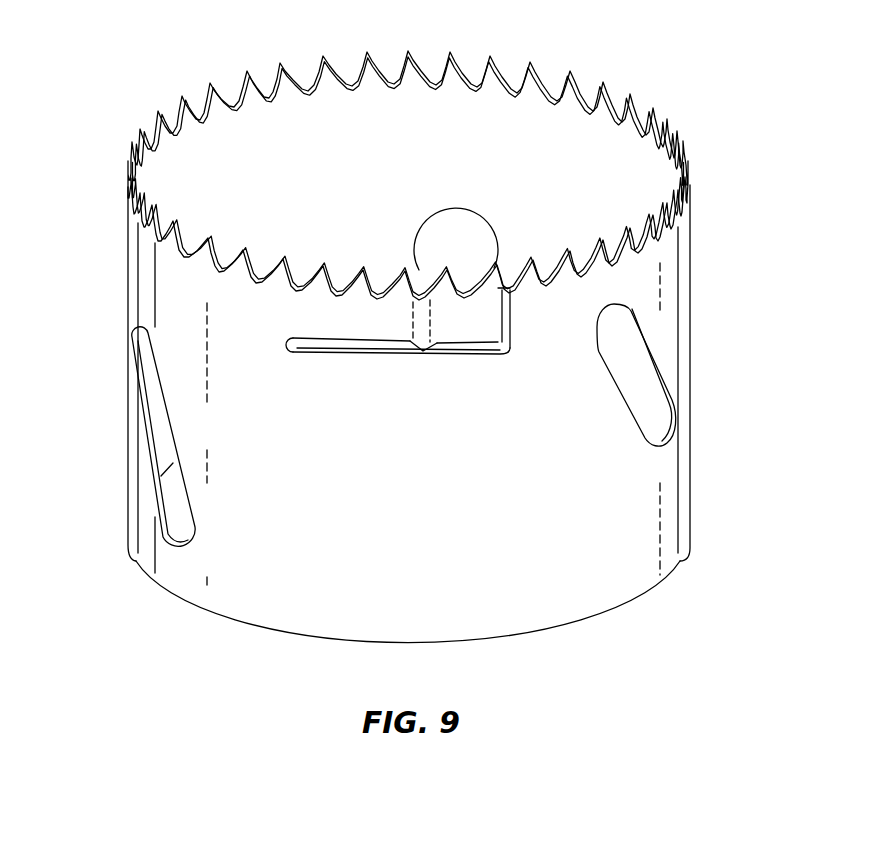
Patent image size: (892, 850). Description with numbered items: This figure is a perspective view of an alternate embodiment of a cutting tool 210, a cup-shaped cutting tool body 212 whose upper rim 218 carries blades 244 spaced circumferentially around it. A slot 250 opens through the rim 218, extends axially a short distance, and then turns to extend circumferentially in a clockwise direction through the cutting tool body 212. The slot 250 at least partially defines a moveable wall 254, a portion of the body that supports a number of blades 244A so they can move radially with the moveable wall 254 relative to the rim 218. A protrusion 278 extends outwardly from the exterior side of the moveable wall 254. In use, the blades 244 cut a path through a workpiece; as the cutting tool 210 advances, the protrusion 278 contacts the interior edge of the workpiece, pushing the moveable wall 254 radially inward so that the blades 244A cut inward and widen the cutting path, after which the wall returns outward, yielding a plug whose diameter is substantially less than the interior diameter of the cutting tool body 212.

The cutting tool 210 is at (134, 58).
The cutting tool body 212 is at (690, 465).
The rim 218 is at (690, 207).
The blades 244 is at (238, 252).
The blades 244A is at (495, 268).
The slot 250 is at (515, 317).
The moveable wall 254 is at (467, 318).
The protrusion 278 is at (410, 312).